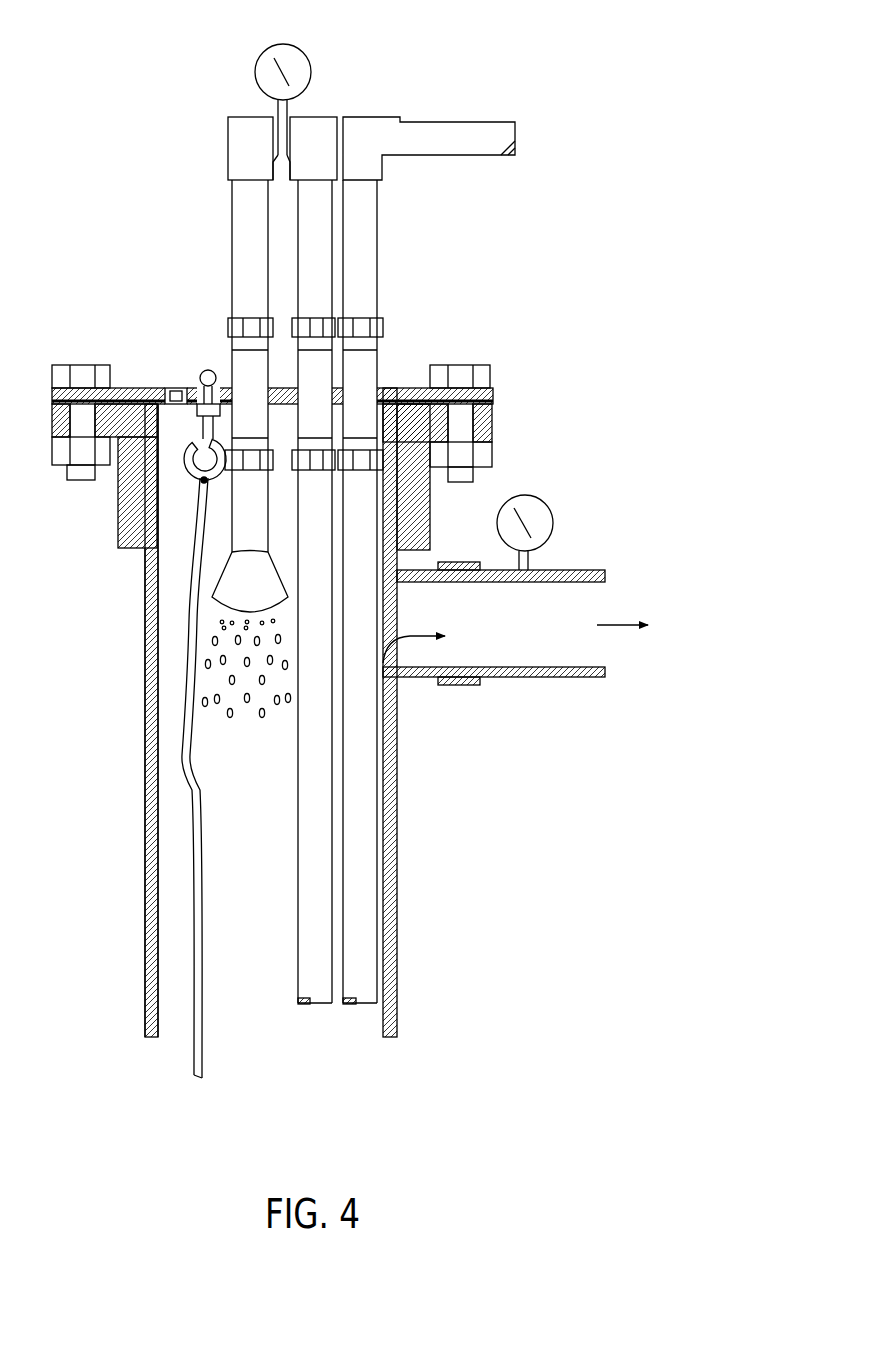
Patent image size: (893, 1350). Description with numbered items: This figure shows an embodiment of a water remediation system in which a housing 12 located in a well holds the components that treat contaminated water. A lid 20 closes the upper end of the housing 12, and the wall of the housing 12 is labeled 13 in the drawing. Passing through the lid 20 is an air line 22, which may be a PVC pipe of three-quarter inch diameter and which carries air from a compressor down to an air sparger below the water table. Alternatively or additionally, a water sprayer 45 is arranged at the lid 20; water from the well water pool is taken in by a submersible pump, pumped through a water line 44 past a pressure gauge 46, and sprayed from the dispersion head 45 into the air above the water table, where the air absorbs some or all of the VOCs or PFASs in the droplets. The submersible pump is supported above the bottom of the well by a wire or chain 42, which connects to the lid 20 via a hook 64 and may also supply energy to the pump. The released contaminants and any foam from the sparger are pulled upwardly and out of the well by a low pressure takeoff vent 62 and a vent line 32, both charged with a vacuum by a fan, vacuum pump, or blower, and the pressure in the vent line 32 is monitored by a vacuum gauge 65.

The housing 12 is at (146, 760).
The inner casing wall 13 is at (148, 878).
The lid 20 is at (130, 387).
The air line 22 is at (382, 283).
The vent line 32 is at (495, 679).
The wire or chain 42 is at (190, 980).
The water line 44 is at (315, 117).
The water sprayer 45 is at (237, 593).
The pressure gauge 46 is at (249, 66).
The low pressure takeoff vent 62 is at (172, 378).
The hook 64 is at (212, 366).
The vacuum gauge 65 is at (551, 508).